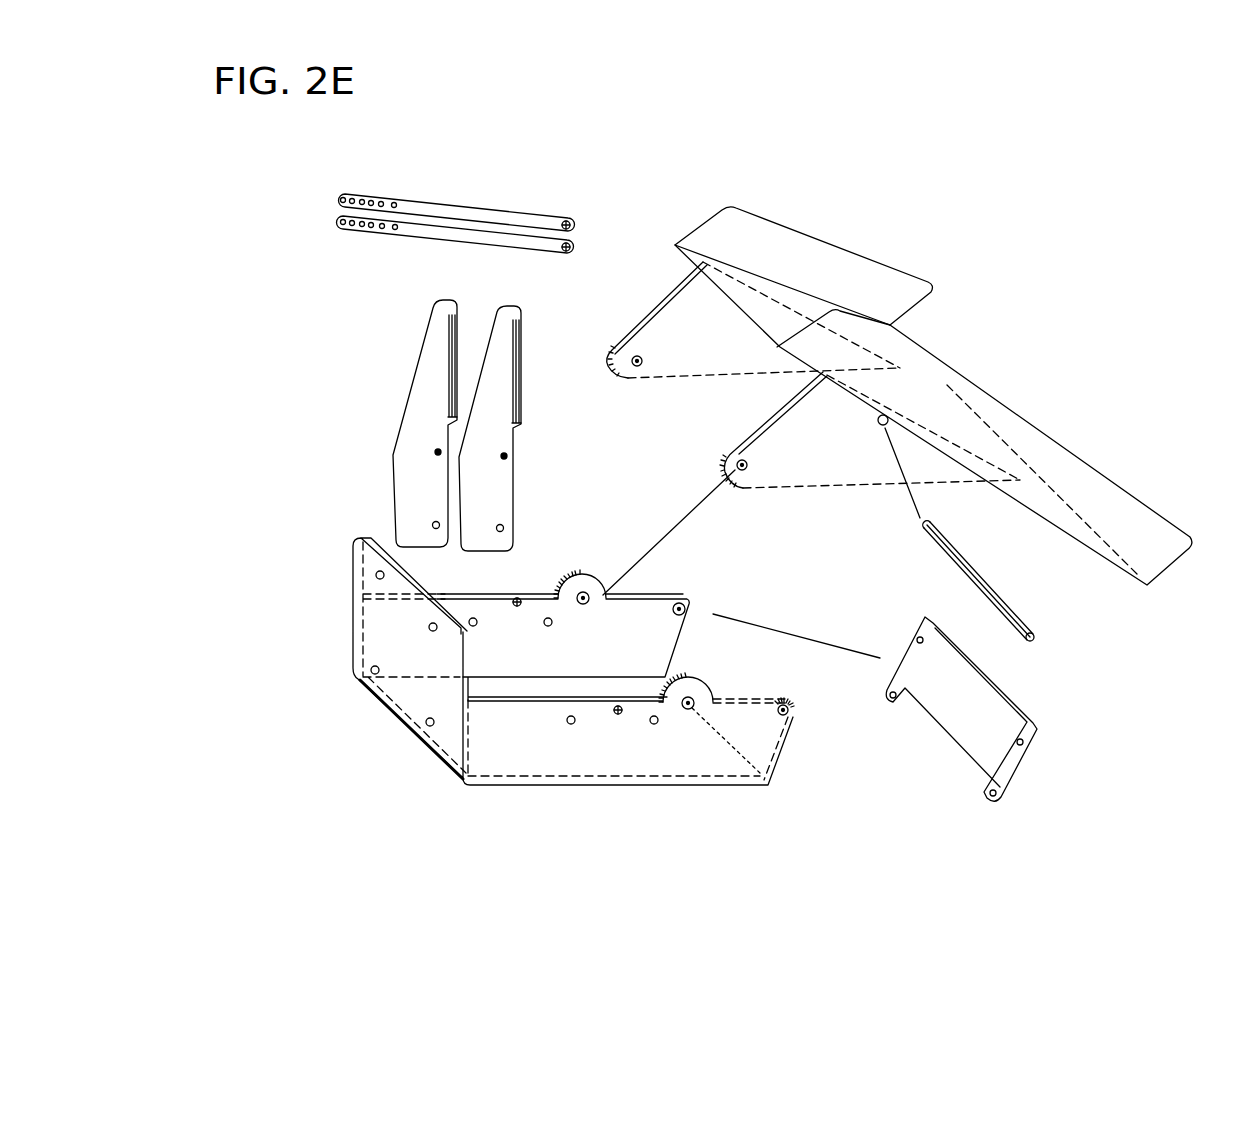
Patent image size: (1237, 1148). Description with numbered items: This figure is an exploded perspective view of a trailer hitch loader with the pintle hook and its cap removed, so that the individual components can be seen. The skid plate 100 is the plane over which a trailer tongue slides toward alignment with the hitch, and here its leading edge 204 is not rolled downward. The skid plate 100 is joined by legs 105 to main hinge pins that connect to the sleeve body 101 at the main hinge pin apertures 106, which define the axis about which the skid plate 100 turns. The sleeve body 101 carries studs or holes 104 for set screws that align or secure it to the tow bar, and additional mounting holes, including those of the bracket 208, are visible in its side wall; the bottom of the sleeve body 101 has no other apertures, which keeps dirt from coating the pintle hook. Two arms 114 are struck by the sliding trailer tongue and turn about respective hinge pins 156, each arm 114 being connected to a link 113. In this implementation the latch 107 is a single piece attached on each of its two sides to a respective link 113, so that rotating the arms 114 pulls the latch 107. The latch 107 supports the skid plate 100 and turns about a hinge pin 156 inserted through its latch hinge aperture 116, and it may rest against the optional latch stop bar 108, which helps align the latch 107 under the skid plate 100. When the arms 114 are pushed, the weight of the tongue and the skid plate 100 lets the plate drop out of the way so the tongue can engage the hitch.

The skid plate 100 is at (917, 351).
The sleeve body 101 is at (619, 660).
The studs or holes 104 is at (473, 626).
The legs 105 is at (782, 375).
The main hinge pin apertures 106 is at (640, 366).
The latch 107 is at (961, 709).
The latch stop bar 108 is at (988, 598).
The link 113 is at (456, 242).
The arms 114 is at (513, 580).
The latch hinge aperture 116 is at (684, 613).
The hinge pin 156 is at (617, 706).
The leading edge 204 is at (913, 342).
The bracket 208 is at (430, 726).